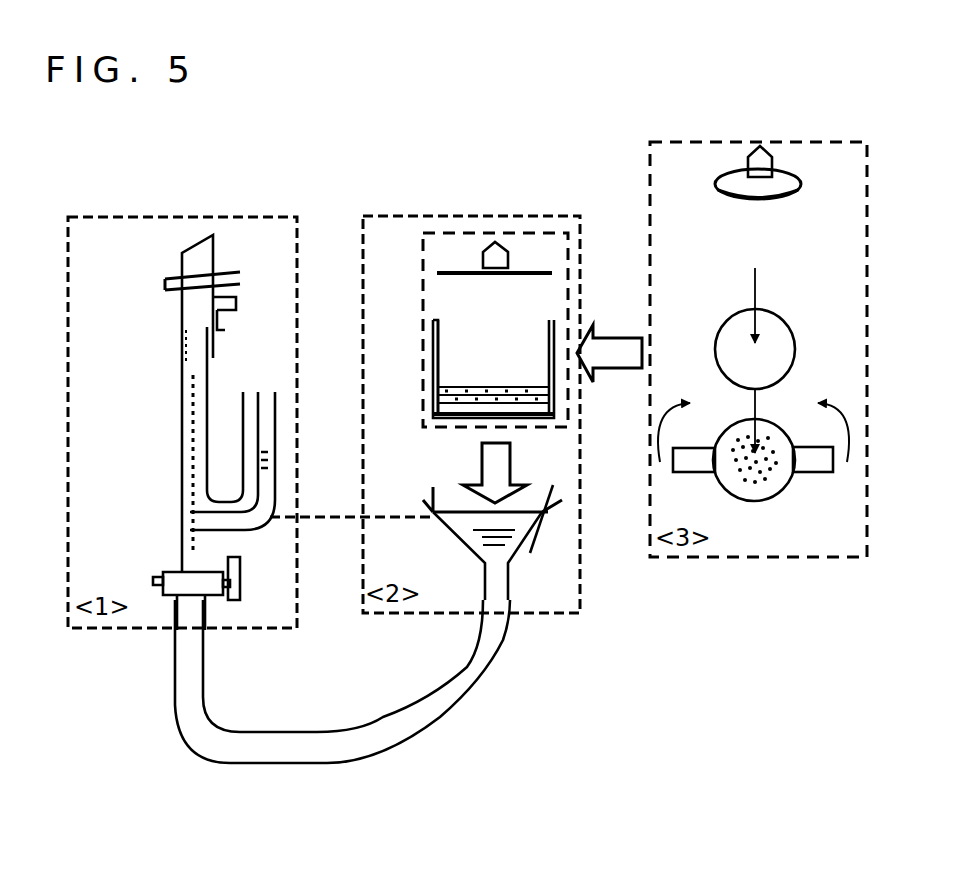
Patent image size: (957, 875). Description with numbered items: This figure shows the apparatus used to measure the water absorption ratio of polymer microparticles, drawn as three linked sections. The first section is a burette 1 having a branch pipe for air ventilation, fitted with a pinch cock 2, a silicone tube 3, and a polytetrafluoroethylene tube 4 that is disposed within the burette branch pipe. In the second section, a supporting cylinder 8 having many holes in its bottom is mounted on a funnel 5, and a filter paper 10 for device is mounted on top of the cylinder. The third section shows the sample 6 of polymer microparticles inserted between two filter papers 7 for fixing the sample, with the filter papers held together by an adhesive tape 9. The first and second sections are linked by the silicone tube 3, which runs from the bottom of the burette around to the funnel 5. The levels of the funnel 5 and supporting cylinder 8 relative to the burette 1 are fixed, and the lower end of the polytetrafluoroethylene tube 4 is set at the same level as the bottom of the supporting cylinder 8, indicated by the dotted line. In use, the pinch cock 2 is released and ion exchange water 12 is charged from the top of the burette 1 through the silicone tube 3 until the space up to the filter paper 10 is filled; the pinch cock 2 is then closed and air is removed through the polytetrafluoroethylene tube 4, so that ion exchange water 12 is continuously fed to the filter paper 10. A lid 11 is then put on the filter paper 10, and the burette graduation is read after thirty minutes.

The burette 1 is at (178, 440).
The pinch cock 2 is at (162, 283).
The silicone tube 3 is at (246, 375).
The polytetrafluoroethylene tube 4 is at (258, 422).
The funnel 5 is at (453, 543).
The sample (polymer microparticles) 6 is at (435, 403).
The filter paper for fixing sample 7 is at (496, 383).
The supporting cylinder 8 is at (431, 491).
The adhesive tape 9 is at (427, 348).
The filter paper for device 10 is at (538, 536).
The lid 11 is at (619, 228).
The ion exchange water 12 is at (295, 750).